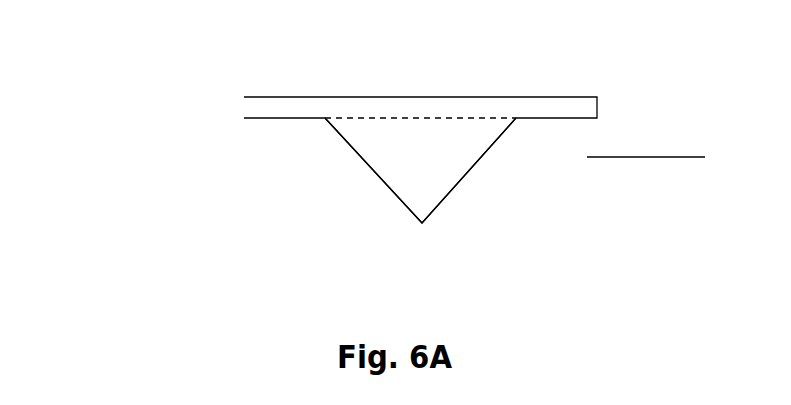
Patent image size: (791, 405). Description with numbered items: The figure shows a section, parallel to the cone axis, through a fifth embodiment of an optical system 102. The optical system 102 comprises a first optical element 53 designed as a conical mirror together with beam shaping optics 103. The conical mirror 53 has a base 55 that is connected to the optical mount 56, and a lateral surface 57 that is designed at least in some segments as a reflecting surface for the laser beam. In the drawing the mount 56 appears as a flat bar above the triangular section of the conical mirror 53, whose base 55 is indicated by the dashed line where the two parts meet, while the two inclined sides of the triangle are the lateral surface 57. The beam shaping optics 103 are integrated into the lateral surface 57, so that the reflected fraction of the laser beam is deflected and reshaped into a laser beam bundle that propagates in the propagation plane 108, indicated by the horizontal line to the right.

The optical system 102 is at (170, 128).
The beam shaping optics 103 is at (343, 162).
The first optical element 53 is at (435, 172).
The base 55 is at (412, 117).
The optical mount 56 is at (525, 103).
The lateral surface 57 is at (390, 192).
The propagation plane 108 is at (660, 157).